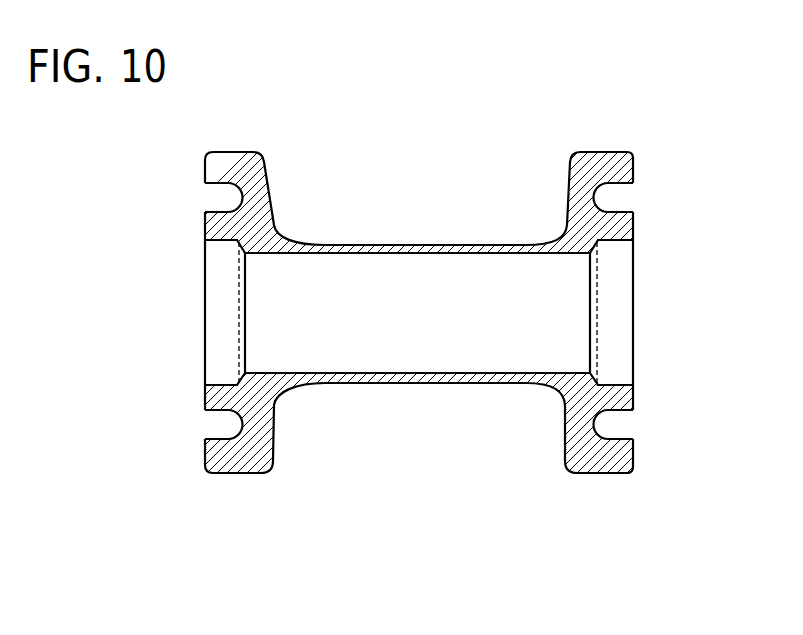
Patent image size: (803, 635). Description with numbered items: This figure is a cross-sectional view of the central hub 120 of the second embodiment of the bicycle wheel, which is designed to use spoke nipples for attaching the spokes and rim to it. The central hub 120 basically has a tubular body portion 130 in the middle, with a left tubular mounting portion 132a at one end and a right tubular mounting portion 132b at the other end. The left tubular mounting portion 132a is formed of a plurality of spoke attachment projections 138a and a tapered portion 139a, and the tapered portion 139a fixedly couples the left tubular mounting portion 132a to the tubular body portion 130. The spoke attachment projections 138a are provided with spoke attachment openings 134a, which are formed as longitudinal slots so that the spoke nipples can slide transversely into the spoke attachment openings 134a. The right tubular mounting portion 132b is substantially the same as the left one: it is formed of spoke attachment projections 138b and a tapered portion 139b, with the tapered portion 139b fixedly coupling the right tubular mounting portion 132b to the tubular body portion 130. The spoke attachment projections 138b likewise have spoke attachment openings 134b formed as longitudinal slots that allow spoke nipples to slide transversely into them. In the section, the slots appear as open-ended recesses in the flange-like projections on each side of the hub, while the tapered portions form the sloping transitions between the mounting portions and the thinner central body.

The central hub 120 is at (597, 99).
The tubular body portion 130 is at (431, 241).
The left tubular mounting portion 132a is at (241, 482).
The right tubular mounting portion 132b is at (611, 482).
The spoke attachment openings 134a is at (232, 192).
The spoke attachment openings 134b is at (607, 191).
The spoke attachment projections 138a is at (268, 170).
The spoke attachment projections 138b is at (570, 185).
The tapered portion 139a is at (291, 229).
The tapered portion 139b is at (544, 396).